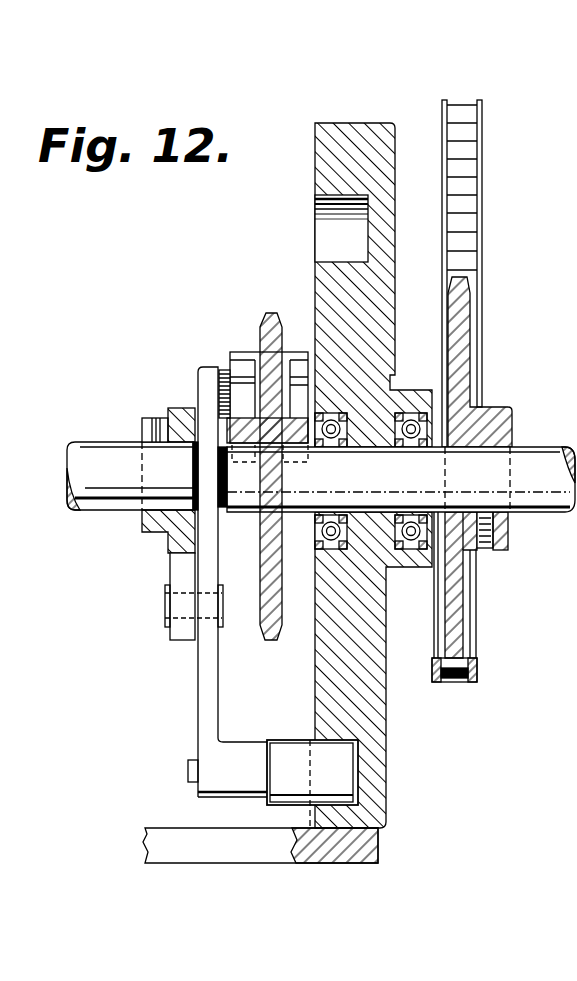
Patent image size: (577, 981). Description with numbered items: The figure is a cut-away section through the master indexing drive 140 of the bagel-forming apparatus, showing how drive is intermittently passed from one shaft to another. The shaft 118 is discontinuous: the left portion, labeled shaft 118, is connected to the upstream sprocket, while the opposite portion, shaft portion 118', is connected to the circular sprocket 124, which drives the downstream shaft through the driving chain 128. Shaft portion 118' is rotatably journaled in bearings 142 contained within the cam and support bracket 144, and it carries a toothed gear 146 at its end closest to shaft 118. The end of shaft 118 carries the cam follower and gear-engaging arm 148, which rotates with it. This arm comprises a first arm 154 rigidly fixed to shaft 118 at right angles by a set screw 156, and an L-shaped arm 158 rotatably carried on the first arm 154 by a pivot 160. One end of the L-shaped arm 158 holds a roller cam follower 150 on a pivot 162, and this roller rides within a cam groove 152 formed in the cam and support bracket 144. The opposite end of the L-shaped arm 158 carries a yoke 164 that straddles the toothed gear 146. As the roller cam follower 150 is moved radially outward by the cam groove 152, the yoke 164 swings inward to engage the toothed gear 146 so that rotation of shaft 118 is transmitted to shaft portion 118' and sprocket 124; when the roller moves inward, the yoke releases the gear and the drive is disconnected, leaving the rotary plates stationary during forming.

The shaft 118 is at (129, 452).
The shaft portion 118' is at (396, 520).
The circular sprocket 124 is at (493, 415).
The driving chain 128 is at (481, 131).
The master indexing drive 140 is at (250, 308).
The bearings 142 is at (336, 418).
The cam and support bracket 144 is at (358, 705).
The toothed gear 146 is at (271, 313).
The cam follower and gear-engaging arm 148 is at (186, 655).
The roller cam follower 150 is at (290, 778).
The cam groove 152 is at (342, 228).
The first arm 154 is at (182, 562).
The set screw 156 is at (163, 418).
The L-shaped arm 158 is at (205, 720).
The pivot 160 is at (228, 608).
The pivot 162 is at (188, 773).
The yoke 164 is at (232, 366).